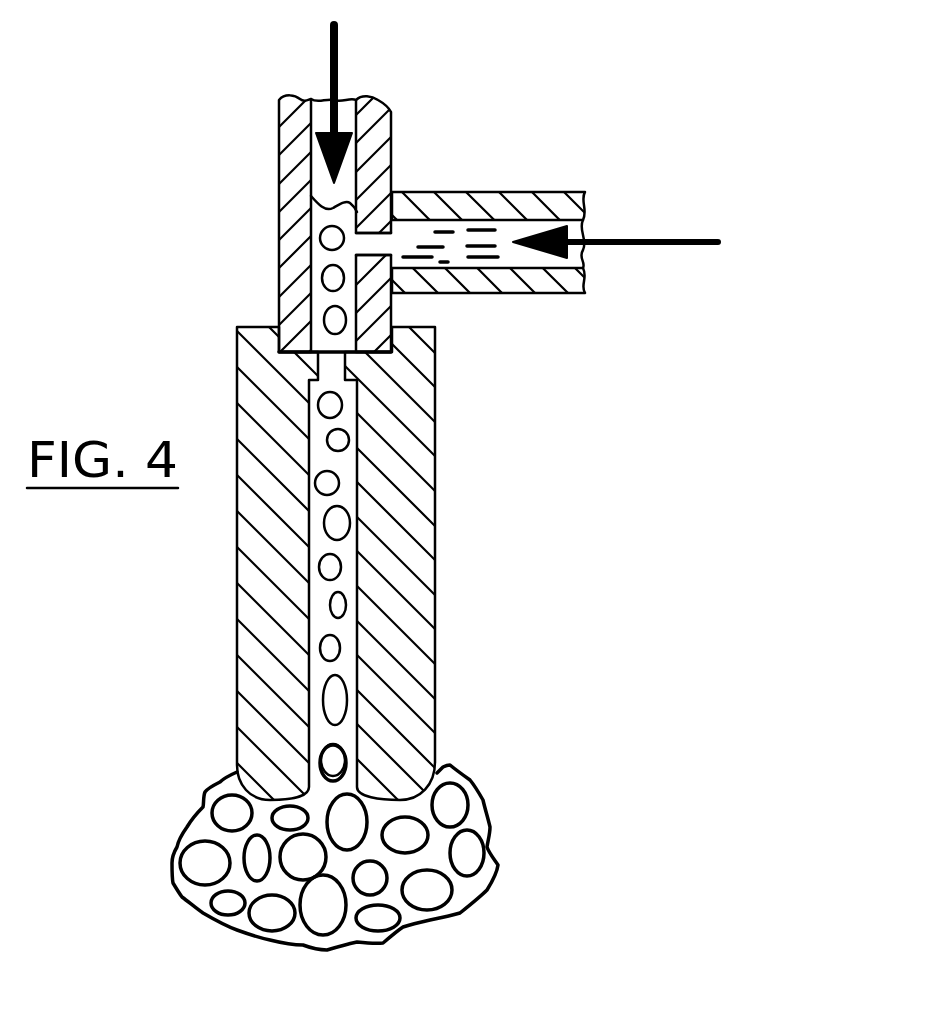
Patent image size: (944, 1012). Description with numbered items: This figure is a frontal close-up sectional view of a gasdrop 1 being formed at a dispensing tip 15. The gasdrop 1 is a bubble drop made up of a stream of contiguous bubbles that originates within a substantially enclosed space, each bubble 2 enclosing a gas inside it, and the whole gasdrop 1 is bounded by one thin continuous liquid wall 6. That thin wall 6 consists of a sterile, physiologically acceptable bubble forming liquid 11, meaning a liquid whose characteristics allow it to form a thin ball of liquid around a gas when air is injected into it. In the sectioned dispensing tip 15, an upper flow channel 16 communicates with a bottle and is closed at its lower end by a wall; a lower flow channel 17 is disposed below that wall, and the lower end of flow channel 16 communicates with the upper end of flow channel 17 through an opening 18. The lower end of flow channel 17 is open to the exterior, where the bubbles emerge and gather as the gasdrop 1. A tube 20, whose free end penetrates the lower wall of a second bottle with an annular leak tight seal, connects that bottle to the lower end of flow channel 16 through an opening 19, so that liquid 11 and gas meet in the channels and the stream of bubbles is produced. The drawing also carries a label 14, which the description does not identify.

The gasdrop 1 is at (487, 897).
The bubble 2 is at (463, 858).
The thin continuous liquid wall 6 is at (311, 196).
The bubble forming liquid 11 is at (462, 248).
The liquid feed 14 is at (393, 113).
The dispensing tip 15 is at (435, 600).
The flow channel 16 is at (280, 100).
The flow channel 17 is at (310, 678).
The opening 18 is at (332, 308).
The opening 19 is at (393, 243).
The tube 20 is at (550, 192).